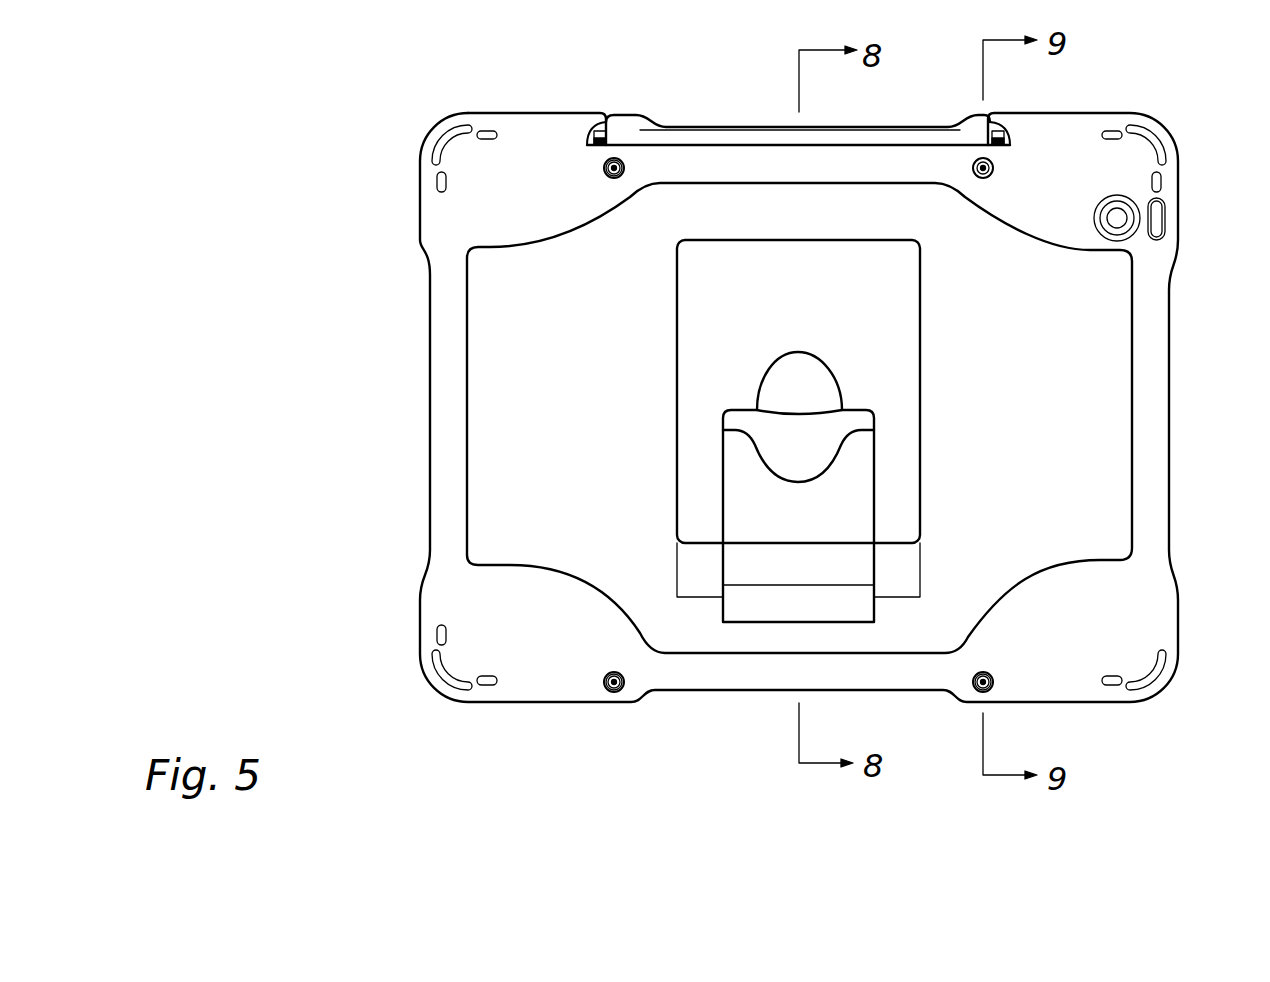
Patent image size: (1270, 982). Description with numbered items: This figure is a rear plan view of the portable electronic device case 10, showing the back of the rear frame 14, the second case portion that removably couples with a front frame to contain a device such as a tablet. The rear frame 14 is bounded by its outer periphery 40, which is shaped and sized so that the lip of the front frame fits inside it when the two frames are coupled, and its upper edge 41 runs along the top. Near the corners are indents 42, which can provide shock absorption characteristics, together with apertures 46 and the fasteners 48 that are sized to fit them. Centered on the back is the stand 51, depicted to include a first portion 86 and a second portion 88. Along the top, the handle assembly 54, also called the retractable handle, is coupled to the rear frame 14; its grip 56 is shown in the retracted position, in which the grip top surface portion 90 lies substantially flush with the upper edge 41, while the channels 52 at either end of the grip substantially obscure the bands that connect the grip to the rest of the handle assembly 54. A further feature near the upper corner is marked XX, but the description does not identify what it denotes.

The device case 10 is at (253, 90).
The rear frame 14 is at (455, 52).
The outer periphery 40 is at (445, 303).
The upper edge 41 is at (749, 366).
The indents 42 is at (437, 181).
The apertures 46 is at (604, 170).
The fasteners 48 is at (613, 178).
The stand 51 is at (862, 431).
The channels 52 is at (592, 133).
The handle assembly 54 is at (777, 77).
The grip 56 is at (716, 124).
The first portion 86 is at (895, 340).
The second portion 88 is at (855, 492).
The grip top surface portion 90 is at (668, 110).
The camera opening XX is at (1147, 138).